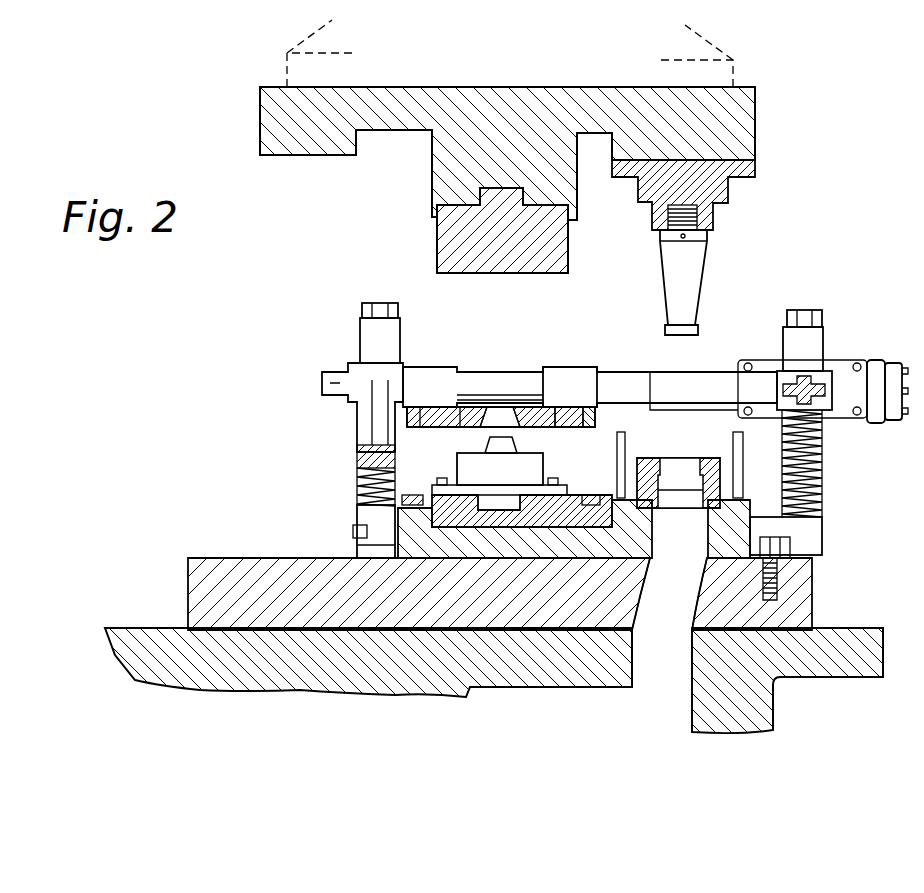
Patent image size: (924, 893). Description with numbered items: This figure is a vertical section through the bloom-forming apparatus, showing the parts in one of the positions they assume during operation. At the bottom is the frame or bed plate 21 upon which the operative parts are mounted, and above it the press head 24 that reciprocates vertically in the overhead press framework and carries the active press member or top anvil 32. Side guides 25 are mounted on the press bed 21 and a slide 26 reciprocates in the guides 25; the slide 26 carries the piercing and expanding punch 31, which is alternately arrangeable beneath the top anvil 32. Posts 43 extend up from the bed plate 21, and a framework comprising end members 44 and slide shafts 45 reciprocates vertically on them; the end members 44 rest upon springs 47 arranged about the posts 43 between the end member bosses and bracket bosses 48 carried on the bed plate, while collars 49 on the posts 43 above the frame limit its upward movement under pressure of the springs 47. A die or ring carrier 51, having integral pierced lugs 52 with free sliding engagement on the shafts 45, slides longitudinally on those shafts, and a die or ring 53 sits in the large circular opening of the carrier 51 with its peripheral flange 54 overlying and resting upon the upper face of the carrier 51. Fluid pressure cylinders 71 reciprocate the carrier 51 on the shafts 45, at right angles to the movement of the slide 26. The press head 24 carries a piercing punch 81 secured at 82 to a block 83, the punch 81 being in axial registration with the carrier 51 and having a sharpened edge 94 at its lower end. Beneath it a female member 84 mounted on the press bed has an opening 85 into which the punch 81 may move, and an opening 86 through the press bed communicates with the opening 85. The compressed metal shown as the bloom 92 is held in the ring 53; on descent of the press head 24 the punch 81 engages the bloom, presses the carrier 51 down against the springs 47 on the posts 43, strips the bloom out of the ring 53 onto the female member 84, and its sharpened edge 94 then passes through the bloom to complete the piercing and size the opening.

The bed plate 21 is at (514, 682).
The press head 24 is at (730, 126).
The side guides 25 is at (570, 508).
The slide 26 is at (552, 500).
The piercing and expanding punch 31 is at (505, 446).
The top anvil 32 is at (440, 238).
The posts 43 is at (360, 484).
The end members 44 is at (362, 431).
The slide shafts 45 is at (497, 376).
The springs 47 is at (814, 458).
The bracket bosses 48 is at (362, 518).
The collars 49 is at (366, 336).
The ring carrier 51 is at (596, 416).
The pierced lugs 52 is at (558, 376).
The die or ring 53 is at (566, 406).
The peripheral flange 54 is at (590, 413).
The fluid pressure cylinders 71 is at (878, 412).
The punch 81 is at (690, 270).
The securing point 82 is at (695, 218).
The block 83 is at (712, 172).
The female member 84 is at (648, 466).
The opening 85 is at (683, 466).
The opening through press bed 86 is at (688, 545).
The bloom 92 is at (474, 427).
The sharpened edge 94 is at (699, 331).